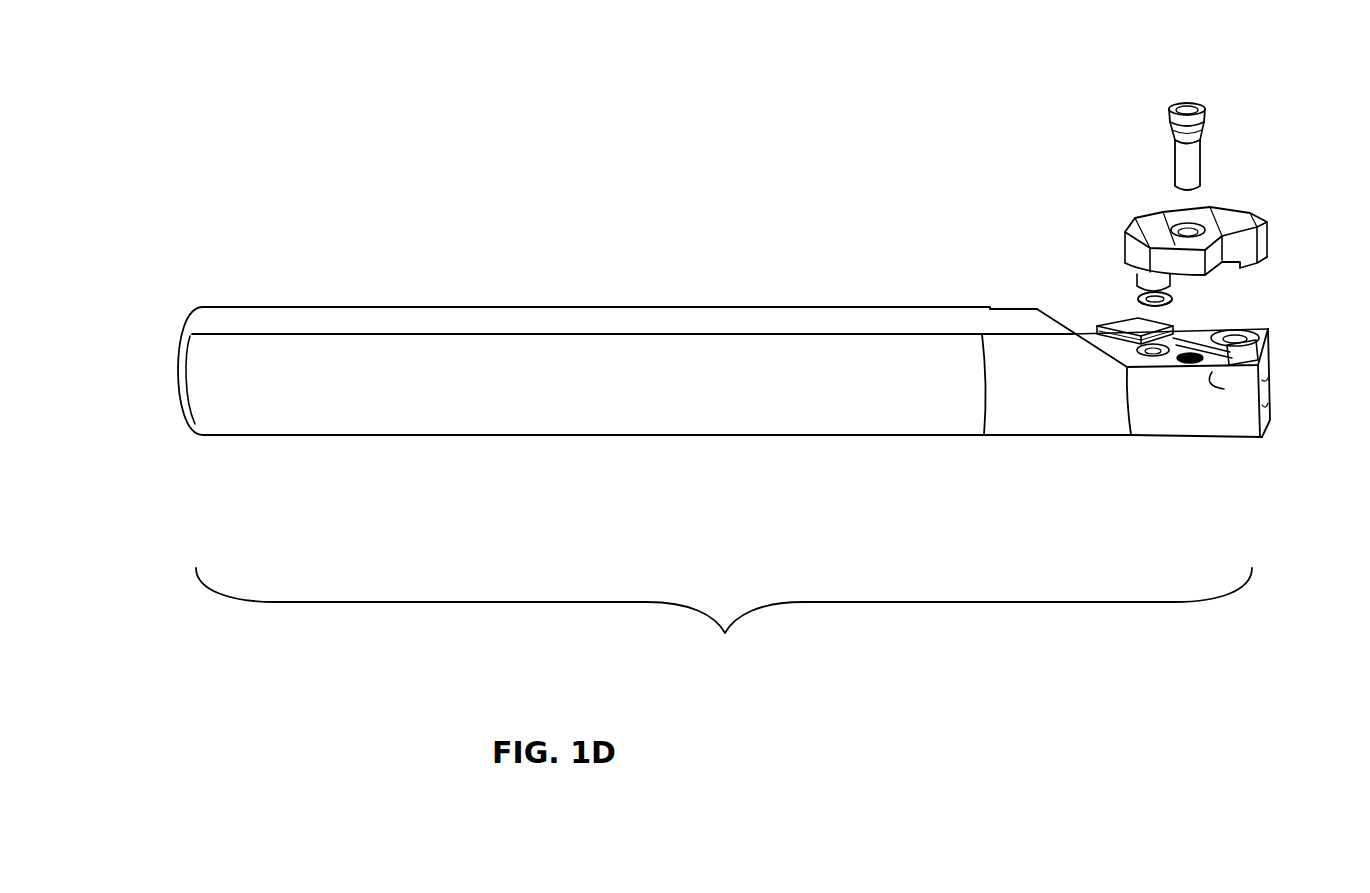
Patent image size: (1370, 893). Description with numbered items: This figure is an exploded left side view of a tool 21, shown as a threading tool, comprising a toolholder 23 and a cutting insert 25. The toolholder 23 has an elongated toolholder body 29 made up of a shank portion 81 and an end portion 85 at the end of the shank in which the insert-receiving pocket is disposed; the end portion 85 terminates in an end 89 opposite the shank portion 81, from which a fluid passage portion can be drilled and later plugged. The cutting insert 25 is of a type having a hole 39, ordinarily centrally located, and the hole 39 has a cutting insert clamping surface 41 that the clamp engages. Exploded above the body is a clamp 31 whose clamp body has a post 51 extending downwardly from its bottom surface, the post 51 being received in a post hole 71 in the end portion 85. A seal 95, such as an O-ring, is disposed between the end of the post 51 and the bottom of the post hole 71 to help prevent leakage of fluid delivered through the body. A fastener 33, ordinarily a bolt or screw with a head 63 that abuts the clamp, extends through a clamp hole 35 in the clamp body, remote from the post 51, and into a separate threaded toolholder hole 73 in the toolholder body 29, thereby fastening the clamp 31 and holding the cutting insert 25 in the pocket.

The tool 21 is at (724, 623).
The toolholder 23 is at (768, 358).
The cutting insert 25 is at (1263, 338).
The toolholder body 29 is at (663, 306).
The clamp 31 is at (1181, 213).
The fastener 33 is at (1196, 126).
The clamp hole 35 is at (1185, 232).
The hole 39 is at (1237, 343).
The cutting insert clamping surface 41 is at (1255, 337).
The post 51 is at (1140, 278).
The head 63 is at (1167, 132).
The post hole 71 is at (1150, 348).
The toolholder hole 73 is at (1187, 333).
The shank portion 81 is at (395, 307).
The end portion 85 is at (1238, 420).
The end 89 is at (1267, 418).
The seal 95 is at (1140, 297).